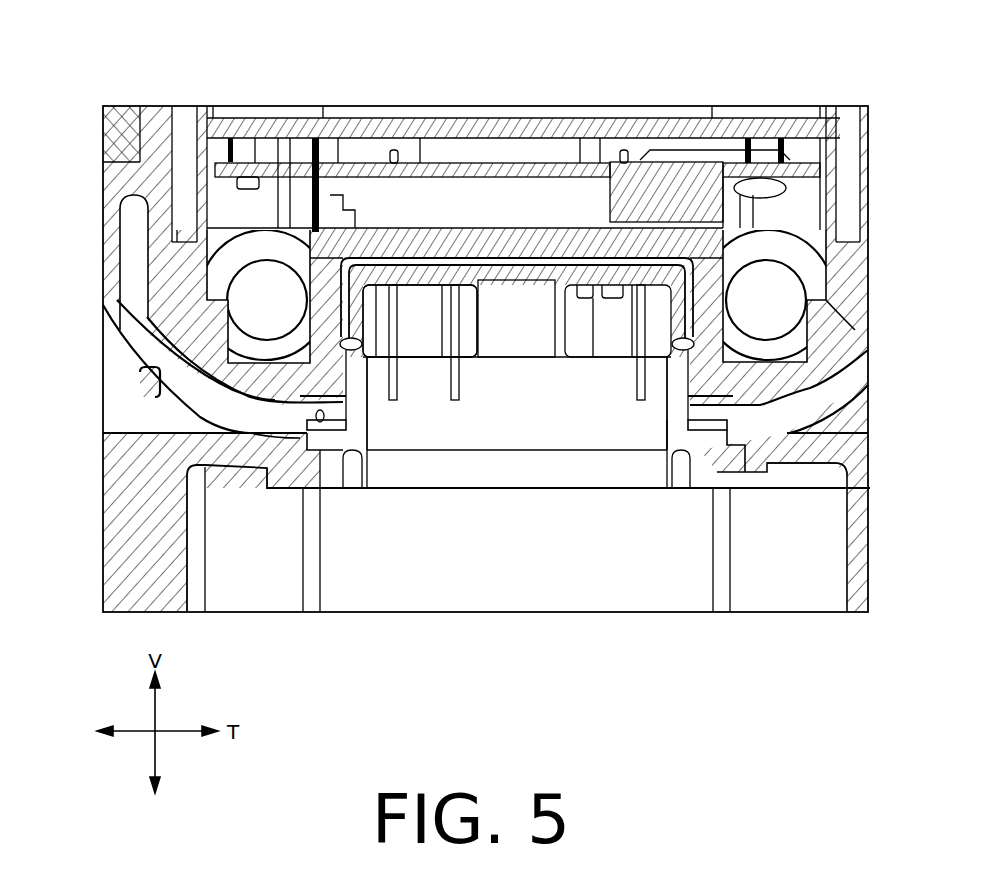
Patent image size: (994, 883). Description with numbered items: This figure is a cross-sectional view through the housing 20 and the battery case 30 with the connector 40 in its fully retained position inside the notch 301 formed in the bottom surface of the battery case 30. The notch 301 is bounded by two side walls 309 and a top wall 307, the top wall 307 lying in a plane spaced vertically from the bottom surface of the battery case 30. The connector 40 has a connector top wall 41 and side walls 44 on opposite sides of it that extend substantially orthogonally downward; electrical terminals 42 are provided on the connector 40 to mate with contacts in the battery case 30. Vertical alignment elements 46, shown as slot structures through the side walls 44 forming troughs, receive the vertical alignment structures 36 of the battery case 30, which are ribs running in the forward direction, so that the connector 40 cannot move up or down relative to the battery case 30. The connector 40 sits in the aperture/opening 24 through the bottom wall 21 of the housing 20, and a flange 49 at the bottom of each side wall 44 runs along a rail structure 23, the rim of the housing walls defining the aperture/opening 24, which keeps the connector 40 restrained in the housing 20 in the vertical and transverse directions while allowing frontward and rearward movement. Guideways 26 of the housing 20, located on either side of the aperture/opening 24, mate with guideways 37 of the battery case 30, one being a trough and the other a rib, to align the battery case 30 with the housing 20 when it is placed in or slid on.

The housing 20 is at (860, 400).
The bottom wall 21 is at (222, 445).
The rail structure 23 is at (333, 450).
The aperture/opening 24 is at (667, 427).
The guideway 26 is at (743, 440).
The battery case 30 is at (862, 350).
The vertical alignment structure 36 is at (330, 342).
The guideway 37 is at (767, 402).
The connector 40 is at (432, 272).
The connector top wall 41 is at (432, 272).
The electrical terminal 42 is at (392, 387).
The side wall 44 is at (350, 426).
The vertical alignment element 46 is at (363, 423).
The flange 49 is at (373, 440).
The notch 301 is at (378, 252).
The top wall 307 is at (565, 242).
The side wall 309 is at (328, 292).